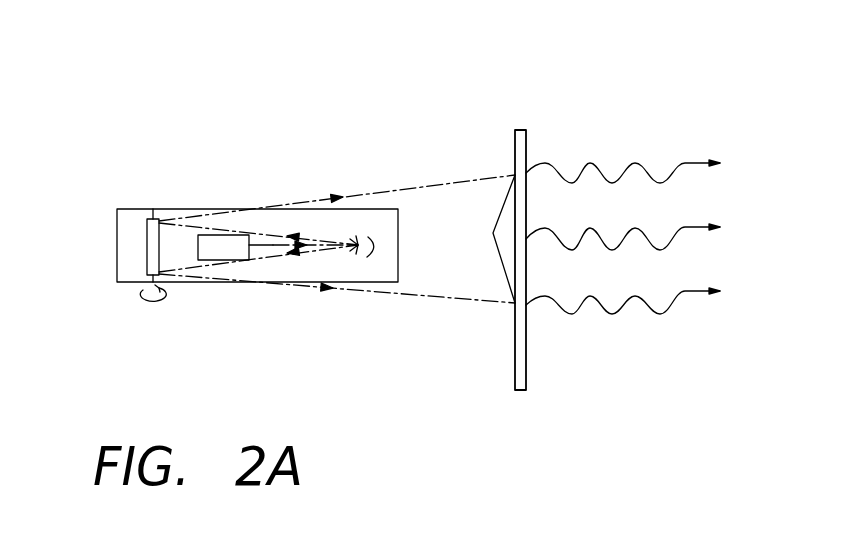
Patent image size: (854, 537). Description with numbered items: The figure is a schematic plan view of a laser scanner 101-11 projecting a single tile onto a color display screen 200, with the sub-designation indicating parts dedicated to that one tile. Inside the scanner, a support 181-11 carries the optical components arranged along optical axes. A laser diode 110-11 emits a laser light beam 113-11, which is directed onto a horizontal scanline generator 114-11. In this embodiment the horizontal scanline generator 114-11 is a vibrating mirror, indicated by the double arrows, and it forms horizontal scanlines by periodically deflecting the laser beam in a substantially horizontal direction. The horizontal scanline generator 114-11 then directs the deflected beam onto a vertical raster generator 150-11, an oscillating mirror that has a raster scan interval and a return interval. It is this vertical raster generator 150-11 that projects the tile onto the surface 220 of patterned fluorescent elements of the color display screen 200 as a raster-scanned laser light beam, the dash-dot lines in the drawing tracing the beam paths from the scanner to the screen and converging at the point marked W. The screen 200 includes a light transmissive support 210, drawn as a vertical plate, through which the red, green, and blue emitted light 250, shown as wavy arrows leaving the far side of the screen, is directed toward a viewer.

The laser scanner 101-11 is at (249, 190).
The support 181-11 is at (141, 209).
The vertical raster generator 150-11 is at (147, 254).
The laser diode 110-11 is at (199, 258).
The laser light beam 113-11 is at (270, 248).
The horizontal scanline generator 114-11 is at (365, 263).
The light transmissive support 210 is at (523, 130).
The surface of patterned fluorescent elements 220 is at (514, 308).
The emitted light 250 is at (642, 234).
The color display screen 200 is at (537, 357).
The beam waist W is at (492, 237).